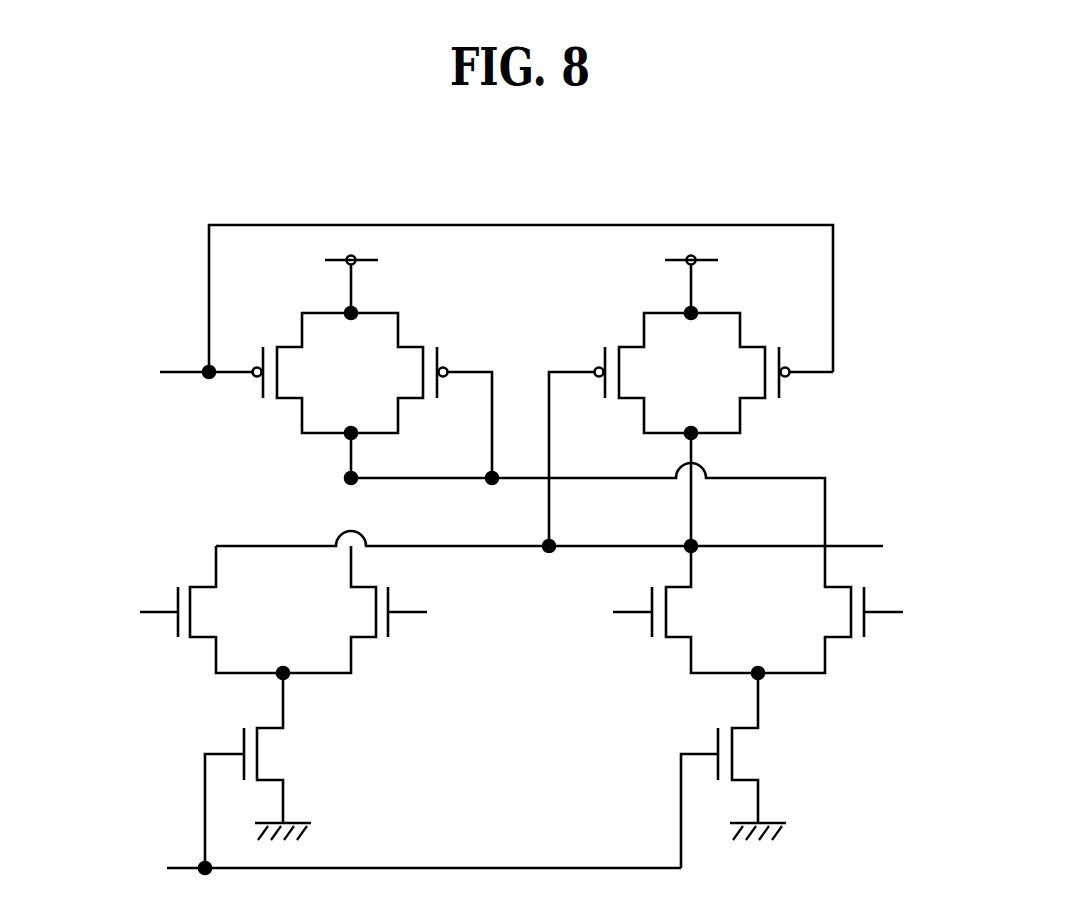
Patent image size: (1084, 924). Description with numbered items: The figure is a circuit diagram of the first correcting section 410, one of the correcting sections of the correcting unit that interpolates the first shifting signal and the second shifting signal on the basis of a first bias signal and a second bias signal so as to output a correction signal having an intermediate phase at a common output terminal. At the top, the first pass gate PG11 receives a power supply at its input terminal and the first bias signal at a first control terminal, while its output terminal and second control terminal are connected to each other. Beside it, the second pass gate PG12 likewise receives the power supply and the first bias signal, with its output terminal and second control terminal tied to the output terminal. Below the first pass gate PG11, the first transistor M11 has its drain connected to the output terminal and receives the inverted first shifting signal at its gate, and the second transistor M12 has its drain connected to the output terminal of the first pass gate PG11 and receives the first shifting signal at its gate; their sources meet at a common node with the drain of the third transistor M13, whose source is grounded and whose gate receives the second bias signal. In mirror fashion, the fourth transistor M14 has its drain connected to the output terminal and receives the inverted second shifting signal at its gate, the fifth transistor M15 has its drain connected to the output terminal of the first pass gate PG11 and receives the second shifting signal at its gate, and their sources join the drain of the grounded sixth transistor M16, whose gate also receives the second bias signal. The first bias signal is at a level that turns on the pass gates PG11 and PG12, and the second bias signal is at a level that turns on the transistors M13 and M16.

The first correcting section 410 is at (909, 177).
The first pass gate PG11 is at (376, 370).
The second pass gate PG12 is at (688, 404).
The first transistor M11 is at (193, 609).
The second transistor M12 is at (375, 609).
The third transistor M13 is at (271, 770).
The fourth transistor M14 is at (667, 609).
The fifth transistor M15 is at (846, 609).
The sixth transistor M16 is at (746, 770).